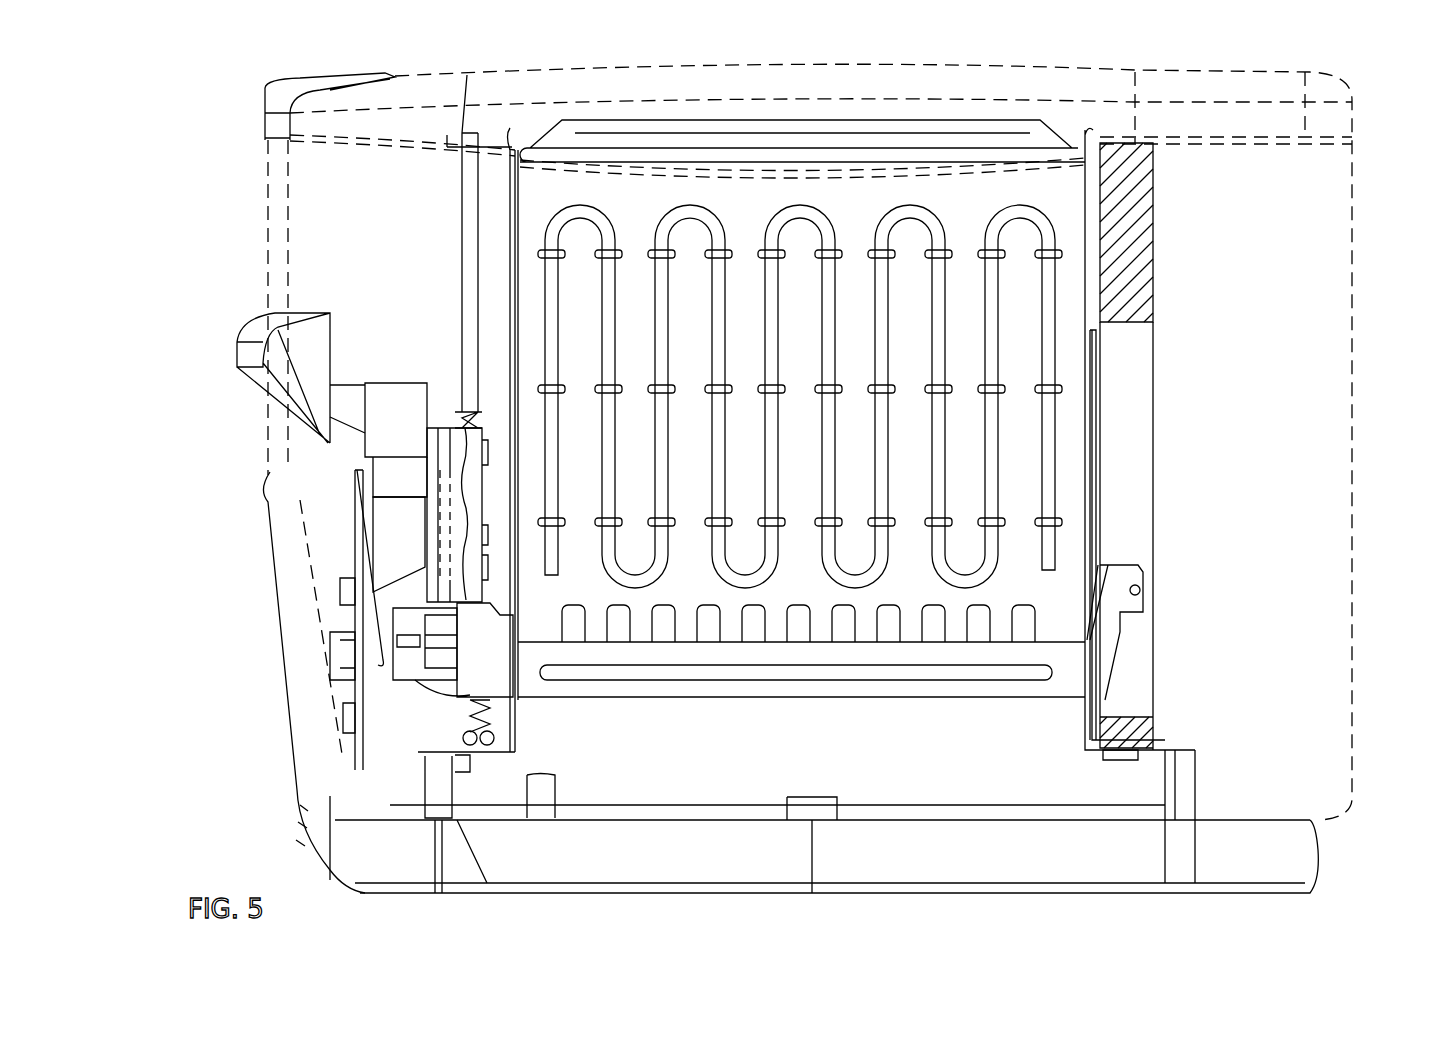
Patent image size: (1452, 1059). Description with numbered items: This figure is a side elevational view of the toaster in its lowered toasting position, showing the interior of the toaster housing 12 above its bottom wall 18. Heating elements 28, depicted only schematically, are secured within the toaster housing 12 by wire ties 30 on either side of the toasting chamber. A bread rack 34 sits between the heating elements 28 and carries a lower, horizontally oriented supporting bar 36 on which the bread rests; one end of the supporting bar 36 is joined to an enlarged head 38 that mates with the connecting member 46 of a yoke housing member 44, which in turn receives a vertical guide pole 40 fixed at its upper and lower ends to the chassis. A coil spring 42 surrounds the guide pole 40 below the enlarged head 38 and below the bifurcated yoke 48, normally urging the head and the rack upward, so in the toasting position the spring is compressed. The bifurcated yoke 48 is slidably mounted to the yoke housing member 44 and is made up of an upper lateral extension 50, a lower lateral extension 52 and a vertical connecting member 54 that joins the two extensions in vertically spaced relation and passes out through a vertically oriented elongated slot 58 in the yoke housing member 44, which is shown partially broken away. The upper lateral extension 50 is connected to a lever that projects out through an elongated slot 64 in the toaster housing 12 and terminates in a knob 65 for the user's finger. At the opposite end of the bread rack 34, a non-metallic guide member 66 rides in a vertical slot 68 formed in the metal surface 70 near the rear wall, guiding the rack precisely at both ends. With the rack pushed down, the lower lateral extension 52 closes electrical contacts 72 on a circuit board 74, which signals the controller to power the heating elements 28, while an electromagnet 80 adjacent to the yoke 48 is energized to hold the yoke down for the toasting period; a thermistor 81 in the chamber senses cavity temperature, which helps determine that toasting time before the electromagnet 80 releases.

The toaster housing 12 is at (1362, 305).
The bottom wall 18 is at (592, 893).
The heating elements 28 is at (805, 205).
The wire ties 30 is at (612, 250).
The bread rack 34 is at (840, 712).
The supporting bar 36 is at (718, 660).
The enlarged head 38 is at (500, 678).
The vertical guide pole 40 is at (462, 187).
The coil spring 42 is at (477, 720).
The yoke housing member 44 is at (470, 412).
The connecting member 46 is at (373, 723).
The bifurcated yoke 48 is at (400, 515).
The upper lateral extension 50 is at (380, 485).
The lower lateral extension 52 is at (345, 590).
The vertical connecting member 54 is at (372, 532).
The elongated slot 58 is at (425, 442).
The elongated slot 64 is at (335, 395).
The knob 65 is at (237, 342).
The guide member 66 is at (1148, 580).
The vertical slot 68 is at (1143, 515).
The metal surface 70 is at (1153, 222).
The electrical contacts 72 is at (360, 637).
The circuit board 74 is at (355, 685).
The electromagnet 80 is at (375, 560).
The thermistor 81 is at (1100, 372).